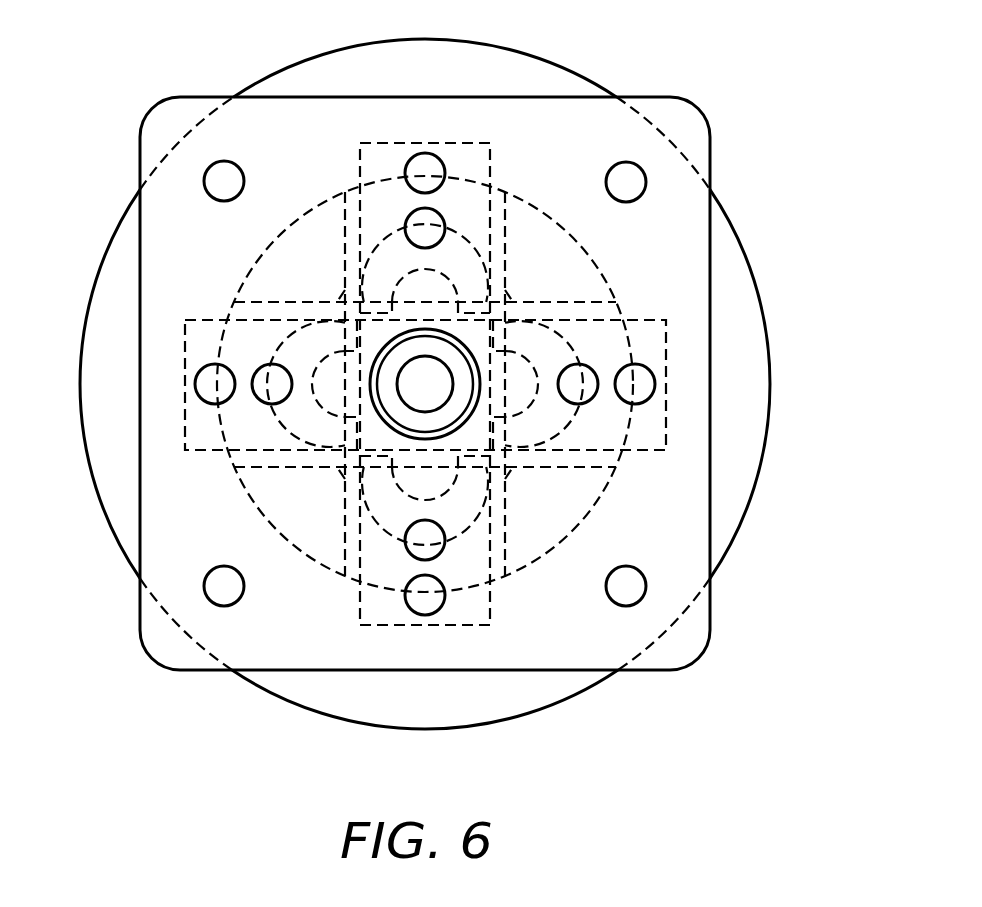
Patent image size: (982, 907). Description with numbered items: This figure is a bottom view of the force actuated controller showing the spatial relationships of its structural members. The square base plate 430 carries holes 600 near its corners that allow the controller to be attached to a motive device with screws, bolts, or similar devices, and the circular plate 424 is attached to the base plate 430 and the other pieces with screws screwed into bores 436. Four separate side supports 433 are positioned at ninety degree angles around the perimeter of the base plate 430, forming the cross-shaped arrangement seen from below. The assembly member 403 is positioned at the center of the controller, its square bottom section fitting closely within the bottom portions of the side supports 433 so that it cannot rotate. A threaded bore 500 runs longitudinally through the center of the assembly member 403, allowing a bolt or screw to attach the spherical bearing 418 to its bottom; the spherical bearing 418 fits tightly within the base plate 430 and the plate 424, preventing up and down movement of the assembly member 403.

The holes 600 is at (218, 182).
The bores 436 is at (468, 316).
The base plate 430 is at (468, 371).
The assembly member 403 is at (507, 381).
The side supports 433 is at (510, 351).
The plate 424 is at (461, 384).
The spherical bearing 418 is at (327, 437).
The threaded bore 500 is at (541, 458).